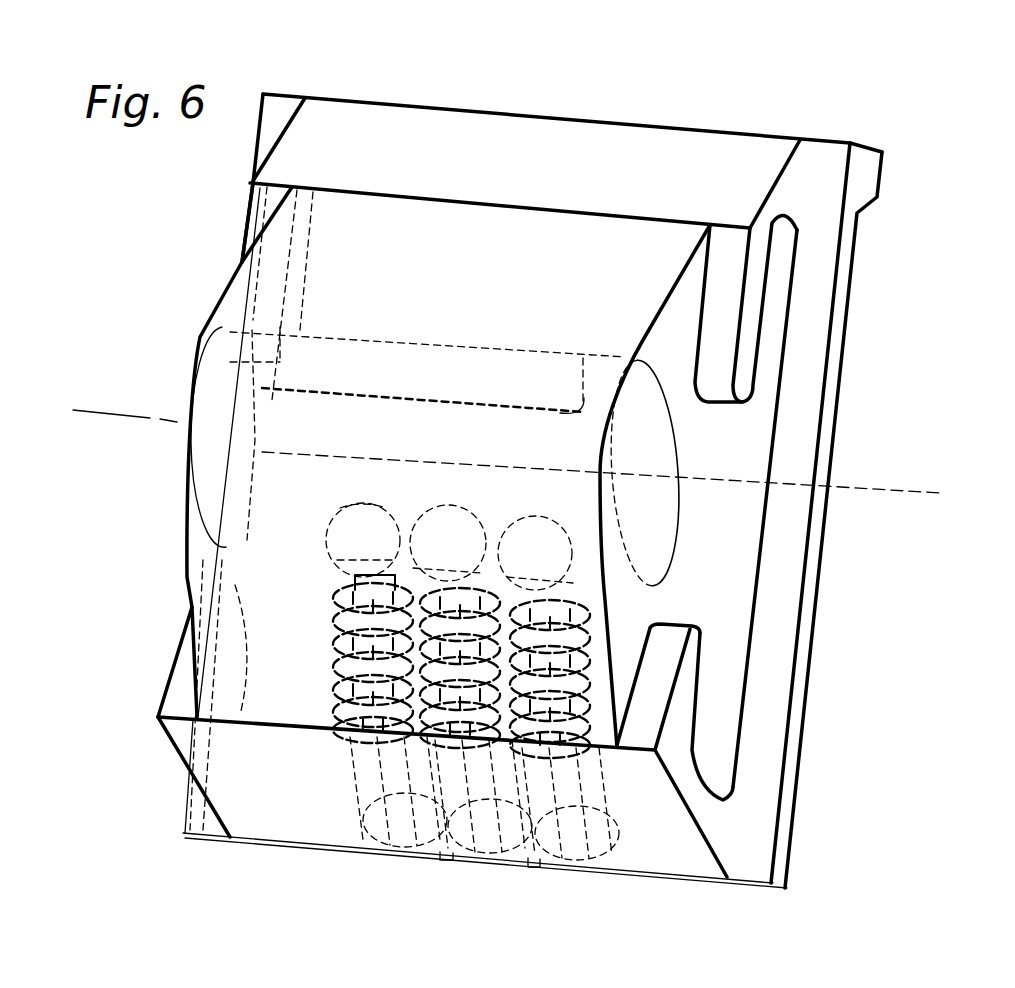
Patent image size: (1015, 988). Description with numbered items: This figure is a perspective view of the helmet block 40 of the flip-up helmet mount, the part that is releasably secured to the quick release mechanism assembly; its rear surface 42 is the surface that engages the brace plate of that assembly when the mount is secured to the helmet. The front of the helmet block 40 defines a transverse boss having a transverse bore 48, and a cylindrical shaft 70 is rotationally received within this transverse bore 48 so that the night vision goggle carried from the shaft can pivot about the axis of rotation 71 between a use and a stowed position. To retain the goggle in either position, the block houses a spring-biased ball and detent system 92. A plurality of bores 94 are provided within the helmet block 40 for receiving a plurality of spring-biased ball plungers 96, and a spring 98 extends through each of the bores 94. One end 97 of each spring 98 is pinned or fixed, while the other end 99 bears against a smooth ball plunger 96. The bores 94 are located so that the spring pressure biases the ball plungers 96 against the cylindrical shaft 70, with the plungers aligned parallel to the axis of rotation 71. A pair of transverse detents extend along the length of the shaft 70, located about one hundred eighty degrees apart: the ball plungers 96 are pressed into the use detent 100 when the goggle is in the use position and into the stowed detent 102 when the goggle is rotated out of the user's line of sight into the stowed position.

The helmet block 40 is at (165, 266).
The rear surface 42 is at (817, 267).
The transverse bore 48 is at (207, 443).
The cylindrical shaft 70 is at (227, 397).
The axis of rotation 71 is at (528, 456).
The stowed detent 102 is at (310, 330).
The use detent 100 is at (347, 503).
The spring-biased ball plunger 96 is at (325, 548).
The other end of spring 99 is at (327, 570).
The spring 98 is at (343, 670).
The one end of spring 97 is at (350, 742).
The bores 94 is at (360, 785).
The spring-biased ball and detent system 92 is at (436, 871).